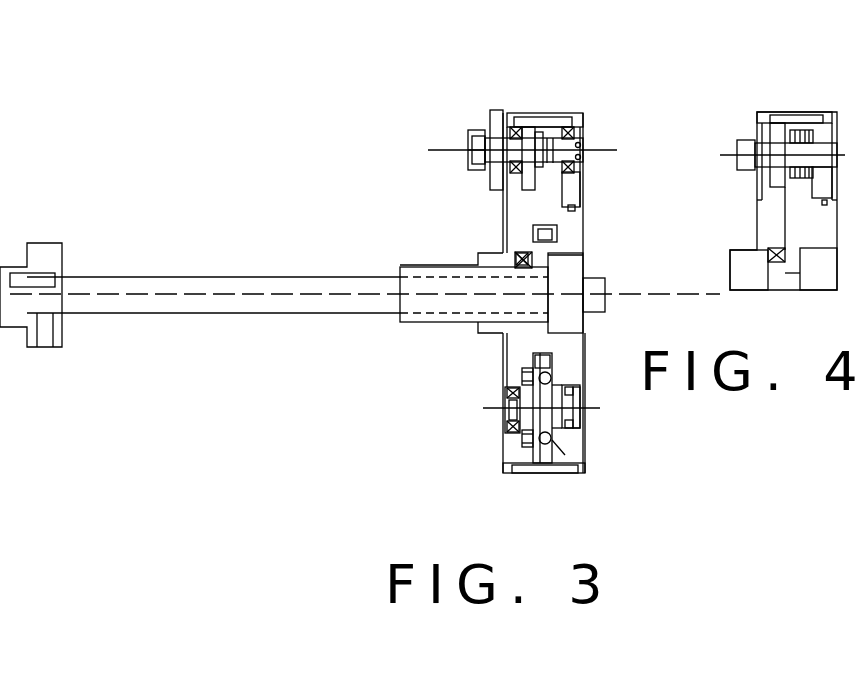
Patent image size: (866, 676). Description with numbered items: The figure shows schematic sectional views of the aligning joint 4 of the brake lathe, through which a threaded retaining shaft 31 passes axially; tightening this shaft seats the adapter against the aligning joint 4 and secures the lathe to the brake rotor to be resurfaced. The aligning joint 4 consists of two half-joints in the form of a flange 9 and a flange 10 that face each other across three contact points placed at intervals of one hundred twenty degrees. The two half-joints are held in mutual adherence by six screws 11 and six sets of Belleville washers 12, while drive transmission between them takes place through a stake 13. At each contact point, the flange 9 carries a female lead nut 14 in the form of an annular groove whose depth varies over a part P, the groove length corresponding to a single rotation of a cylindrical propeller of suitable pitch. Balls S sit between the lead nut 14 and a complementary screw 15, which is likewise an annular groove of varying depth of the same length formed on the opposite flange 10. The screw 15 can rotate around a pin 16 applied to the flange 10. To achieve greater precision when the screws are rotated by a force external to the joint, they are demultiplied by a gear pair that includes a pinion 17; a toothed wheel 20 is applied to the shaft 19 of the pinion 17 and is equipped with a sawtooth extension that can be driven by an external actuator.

In FIG. 3, the aligning joint 4 is at (428, 128).
In FIG. 3, the flange 9 is at (570, 225).
In FIG. 3, the flange 10 is at (518, 217).
In FIG. 4, the screws 11 is at (763, 112).
In FIG. 4, the Belleville washers 12 is at (797, 135).
In FIG. 3, the stake 13 is at (558, 233).
In FIG. 3, the female lead nut 14 is at (551, 372).
In FIG. 3, the screw 15 is at (503, 418).
In FIG. 3, the pin 16 is at (556, 409).
In FIG. 3, the pinion 17 is at (535, 130).
In FIG. 3, the shaft 19 is at (455, 152).
In FIG. 3, the toothed wheel 20 is at (497, 110).
In FIG. 3, the threaded retaining shaft 31 is at (253, 297).
In FIG. 3, the balls S is at (520, 373).
In FIG. 3, the part P is at (566, 446).